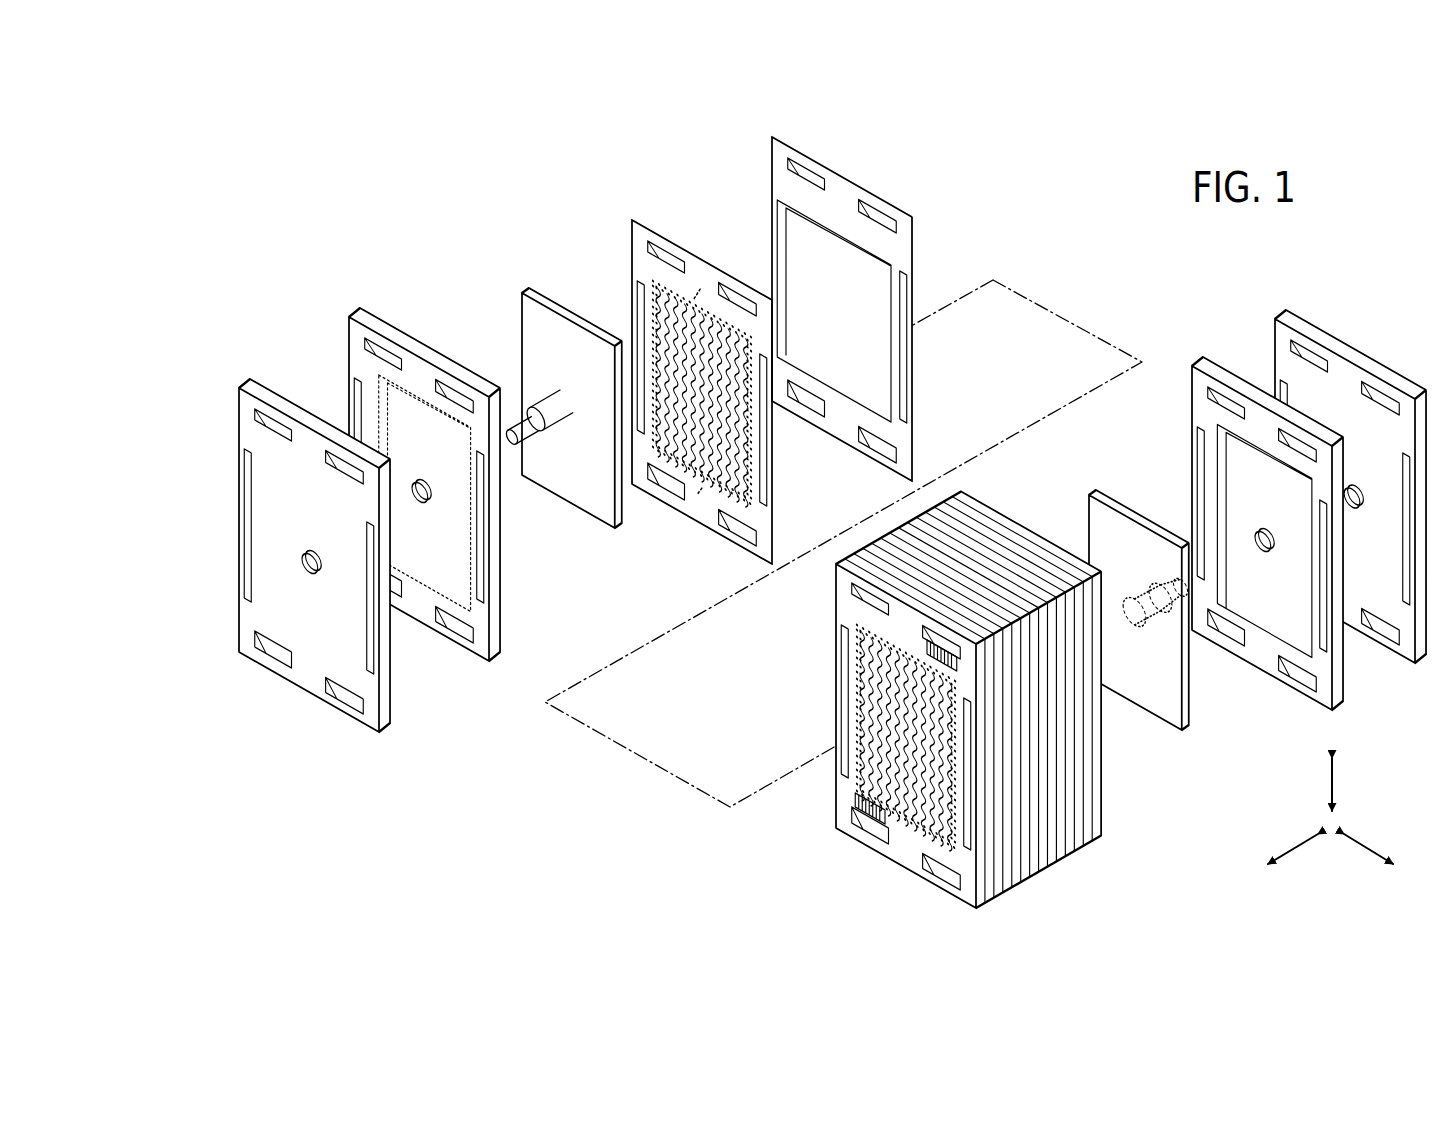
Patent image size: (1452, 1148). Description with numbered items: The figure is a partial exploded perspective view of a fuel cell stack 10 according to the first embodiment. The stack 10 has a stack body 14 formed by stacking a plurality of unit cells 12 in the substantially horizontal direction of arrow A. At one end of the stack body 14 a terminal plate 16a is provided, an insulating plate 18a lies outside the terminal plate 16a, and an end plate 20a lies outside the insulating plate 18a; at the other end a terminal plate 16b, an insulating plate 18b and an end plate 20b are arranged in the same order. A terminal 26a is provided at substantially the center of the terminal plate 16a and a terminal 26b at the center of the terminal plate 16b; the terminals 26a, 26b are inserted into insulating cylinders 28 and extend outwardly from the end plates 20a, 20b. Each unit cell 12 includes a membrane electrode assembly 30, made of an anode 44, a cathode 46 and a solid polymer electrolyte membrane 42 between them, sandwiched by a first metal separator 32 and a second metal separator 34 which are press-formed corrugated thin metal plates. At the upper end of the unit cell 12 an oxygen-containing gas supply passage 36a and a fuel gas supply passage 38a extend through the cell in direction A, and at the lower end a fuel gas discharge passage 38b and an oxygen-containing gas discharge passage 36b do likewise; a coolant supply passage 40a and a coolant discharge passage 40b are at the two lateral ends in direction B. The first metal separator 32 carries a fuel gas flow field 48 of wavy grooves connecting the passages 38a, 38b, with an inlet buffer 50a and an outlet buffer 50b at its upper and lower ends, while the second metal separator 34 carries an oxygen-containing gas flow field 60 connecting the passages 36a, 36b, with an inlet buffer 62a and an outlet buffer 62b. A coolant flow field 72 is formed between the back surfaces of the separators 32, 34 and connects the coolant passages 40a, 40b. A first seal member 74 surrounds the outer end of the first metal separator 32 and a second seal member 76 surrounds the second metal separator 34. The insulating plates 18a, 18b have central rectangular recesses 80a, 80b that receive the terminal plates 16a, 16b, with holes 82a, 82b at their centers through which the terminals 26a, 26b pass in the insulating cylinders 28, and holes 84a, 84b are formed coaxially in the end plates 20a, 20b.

The fuel cell stack 10 is at (1081, 230).
The unit cell 12 is at (1050, 880).
The stack body 14 is at (973, 700).
The terminal plate 16a is at (537, 331).
The terminal plate 16b is at (1092, 522).
The insulating plate 18a is at (343, 315).
The insulating plate 18b is at (1196, 356).
The end plate 20a is at (236, 385).
The end plate 20b is at (1272, 314).
The terminal 26a is at (537, 440).
The terminal 26b is at (1182, 540).
The insulating cylinder 28 is at (548, 400).
The membrane electrode assembly 30 is at (831, 297).
The first metal separator 32 is at (893, 880).
The second metal separator 34 is at (628, 219).
The oxygen-containing gas supply passage 36a is at (262, 414).
The oxygen-containing gas discharge passage 36b is at (348, 712).
The fuel gas supply passage 38a is at (342, 465).
The fuel gas discharge passage 38b is at (262, 642).
The coolant supply passage 40a is at (246, 490).
The coolant discharge passage 40b is at (370, 656).
The solid polymer electrolyte membrane 42 is at (906, 440).
The anode 44 is at (838, 248).
The cathode 46 is at (888, 320).
The fuel gas flow field 48 is at (878, 700).
The inlet buffer 50a is at (862, 630).
The outlet buffer 50b is at (852, 808).
The oxygen-containing gas flow field 60 is at (774, 462).
The inlet buffer 62a is at (700, 290).
The outlet buffer 62b is at (700, 522).
The coolant flow field 72 is at (650, 316).
The first seal member 74 is at (857, 842).
The second seal member 76 is at (656, 498).
The rectangular recess 80a is at (418, 382).
The rectangular recess 80b is at (1222, 458).
The hole 82a is at (413, 504).
The hole 82b is at (1266, 542).
The hole 84a is at (306, 572).
The hole 84b is at (1352, 484).